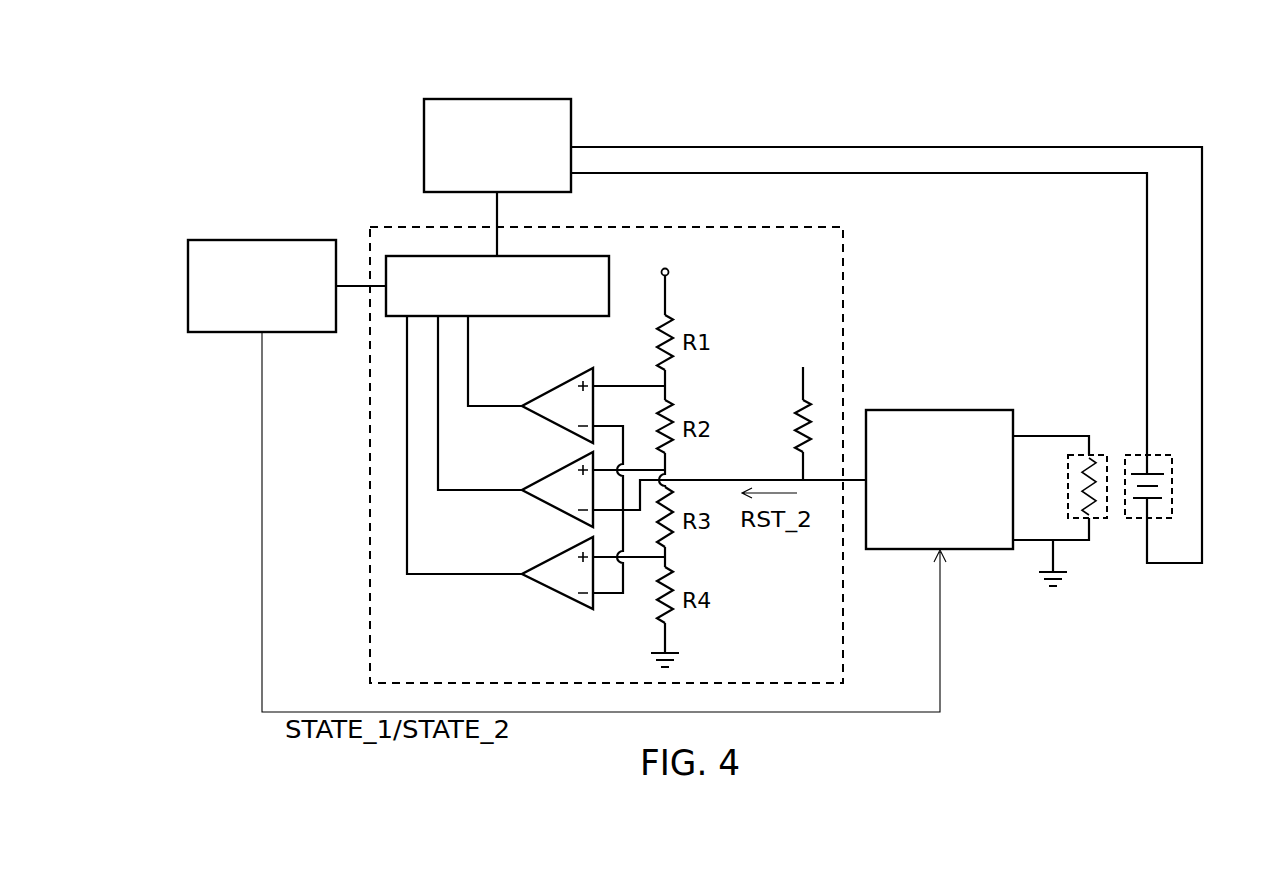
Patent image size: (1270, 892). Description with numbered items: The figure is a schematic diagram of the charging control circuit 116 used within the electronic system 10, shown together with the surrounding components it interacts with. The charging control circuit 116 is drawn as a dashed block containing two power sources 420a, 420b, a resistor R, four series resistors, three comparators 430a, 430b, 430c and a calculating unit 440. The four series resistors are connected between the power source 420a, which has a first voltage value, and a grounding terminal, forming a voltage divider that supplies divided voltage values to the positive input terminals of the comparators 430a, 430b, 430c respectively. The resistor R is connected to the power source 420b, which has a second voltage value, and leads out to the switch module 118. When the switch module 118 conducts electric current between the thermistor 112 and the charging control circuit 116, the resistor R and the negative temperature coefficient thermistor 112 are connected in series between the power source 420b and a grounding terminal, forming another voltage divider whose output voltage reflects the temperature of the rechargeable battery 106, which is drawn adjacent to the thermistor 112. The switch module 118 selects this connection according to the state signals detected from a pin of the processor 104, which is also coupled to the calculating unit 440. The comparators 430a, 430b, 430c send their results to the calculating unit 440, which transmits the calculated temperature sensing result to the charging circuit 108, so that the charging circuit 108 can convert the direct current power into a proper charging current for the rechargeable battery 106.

The electronic system 10 is at (1122, 100).
The processor 104 is at (262, 240).
The rechargeable battery 106 is at (1170, 455).
The charging circuit 108 is at (424, 148).
The thermistor 112 is at (1103, 455).
The charging control circuit 116 is at (843, 256).
The switch module 118 is at (940, 410).
The power source 420a is at (676, 258).
The power source 420b is at (805, 411).
The comparator 430a is at (560, 385).
The comparator 430b is at (560, 469).
The comparator 430c is at (560, 553).
The calculating unit 440 is at (398, 256).